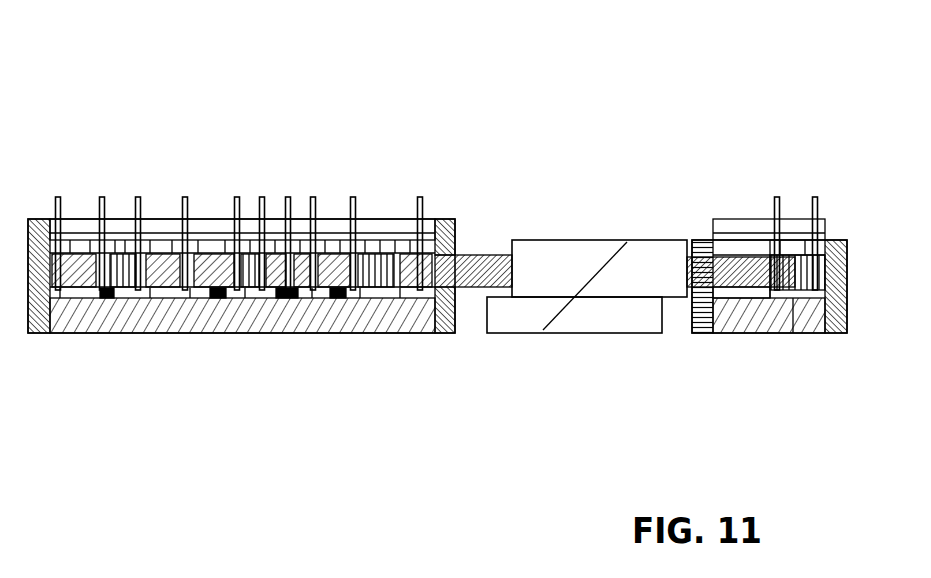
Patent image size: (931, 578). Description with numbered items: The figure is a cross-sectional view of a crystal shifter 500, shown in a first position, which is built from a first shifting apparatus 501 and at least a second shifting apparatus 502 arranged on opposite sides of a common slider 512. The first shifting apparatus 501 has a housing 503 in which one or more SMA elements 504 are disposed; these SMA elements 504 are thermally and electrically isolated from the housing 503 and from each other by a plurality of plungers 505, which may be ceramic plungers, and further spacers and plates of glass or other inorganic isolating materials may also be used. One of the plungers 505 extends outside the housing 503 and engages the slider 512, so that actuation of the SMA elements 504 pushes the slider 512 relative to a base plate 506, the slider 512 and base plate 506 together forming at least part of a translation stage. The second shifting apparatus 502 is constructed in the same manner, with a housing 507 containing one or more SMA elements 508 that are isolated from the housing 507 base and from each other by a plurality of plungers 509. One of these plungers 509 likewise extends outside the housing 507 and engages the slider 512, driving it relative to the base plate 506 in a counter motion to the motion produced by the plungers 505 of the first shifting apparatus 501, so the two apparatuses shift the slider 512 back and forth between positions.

The crystal shifter 500 is at (162, 90).
The first shifting apparatus 501 is at (141, 185).
The second shifting apparatus 502 is at (802, 170).
The housing 503 is at (325, 333).
The SMA elements 504 is at (262, 197).
The plungers 505 is at (210, 240).
The base plate 506 is at (562, 333).
The housing 507 is at (733, 333).
The SMA elements 508 is at (792, 333).
The plungers 509 is at (715, 219).
The slider 512 is at (608, 240).